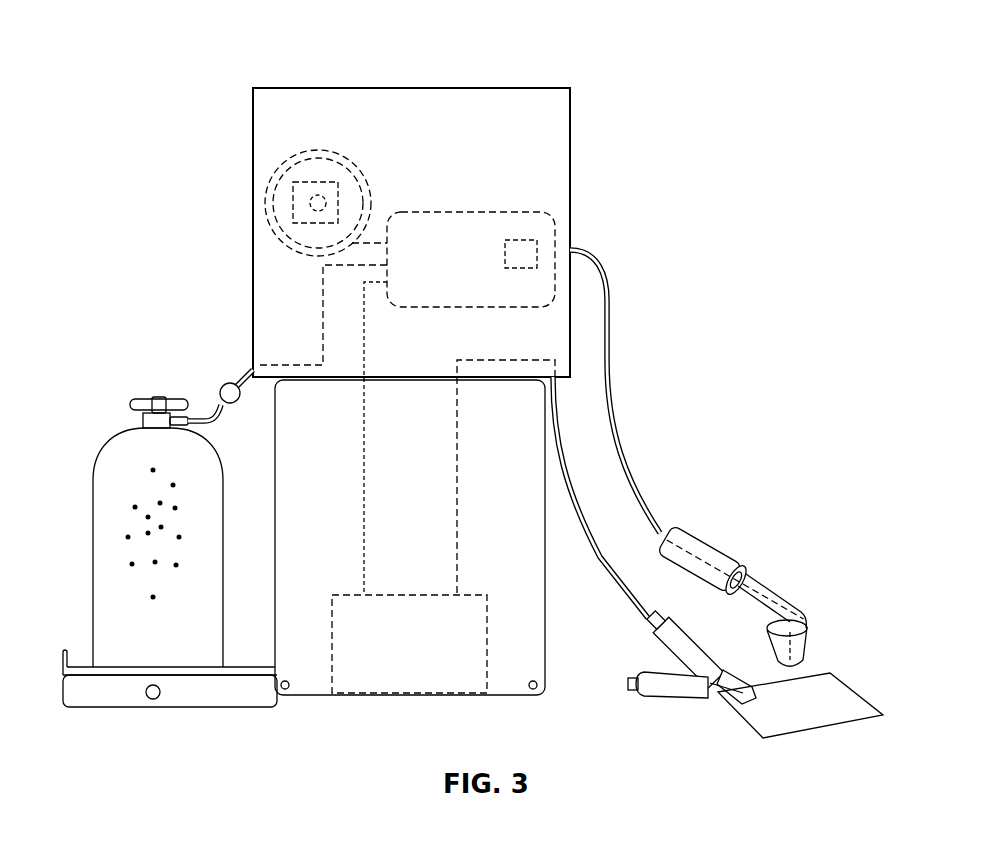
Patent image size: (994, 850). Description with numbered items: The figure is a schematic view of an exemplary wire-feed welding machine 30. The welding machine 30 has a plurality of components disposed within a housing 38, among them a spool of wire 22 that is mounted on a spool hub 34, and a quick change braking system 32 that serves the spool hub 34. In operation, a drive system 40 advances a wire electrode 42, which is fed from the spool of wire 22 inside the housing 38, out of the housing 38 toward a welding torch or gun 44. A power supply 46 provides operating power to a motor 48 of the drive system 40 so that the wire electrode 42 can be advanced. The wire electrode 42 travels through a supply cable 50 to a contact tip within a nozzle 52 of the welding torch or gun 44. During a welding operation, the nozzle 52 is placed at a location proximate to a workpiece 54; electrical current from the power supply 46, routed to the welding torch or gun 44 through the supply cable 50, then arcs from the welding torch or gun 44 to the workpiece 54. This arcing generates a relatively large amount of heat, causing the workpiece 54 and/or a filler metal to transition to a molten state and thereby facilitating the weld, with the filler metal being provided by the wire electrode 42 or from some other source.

The wire-feed welding machine 30 is at (487, 42).
The housing 38 is at (337, 88).
The spool of wire 22 is at (326, 149).
The spool hub 34 is at (305, 190).
The quick change braking system 32 is at (308, 204).
The wire electrode 42 is at (383, 243).
The drive system 40 is at (425, 212).
The motor 48 is at (528, 240).
The supply cable 50 is at (609, 418).
The welding torch or gun 44 is at (690, 527).
The nozzle 52 is at (810, 645).
The workpiece 54 is at (792, 720).
The power supply 46 is at (467, 595).